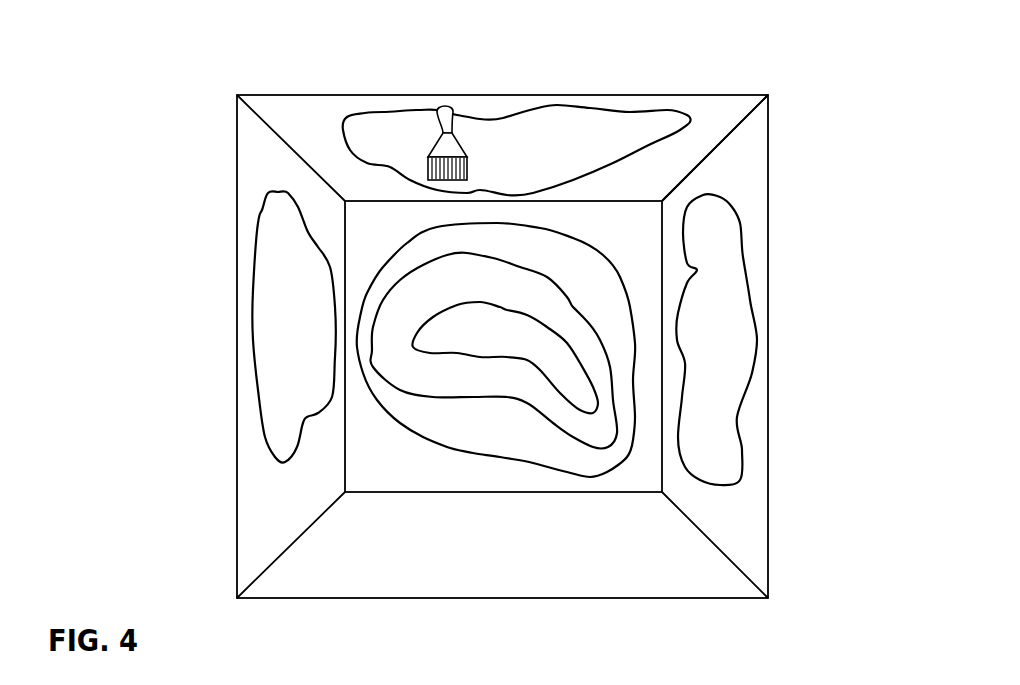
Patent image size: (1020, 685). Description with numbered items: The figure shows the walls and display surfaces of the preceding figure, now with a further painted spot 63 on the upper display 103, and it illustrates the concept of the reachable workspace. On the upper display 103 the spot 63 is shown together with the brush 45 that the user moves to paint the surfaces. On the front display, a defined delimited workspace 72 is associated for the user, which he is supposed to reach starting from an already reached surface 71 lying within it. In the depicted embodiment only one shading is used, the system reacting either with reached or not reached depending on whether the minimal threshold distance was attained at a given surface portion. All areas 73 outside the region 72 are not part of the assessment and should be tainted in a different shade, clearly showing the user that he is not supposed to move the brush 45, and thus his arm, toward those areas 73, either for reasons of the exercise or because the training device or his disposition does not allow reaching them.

The painted spot 63 is at (343, 118).
The brush 45 is at (447, 140).
The upper display 103 is at (712, 117).
The areas outside the region 73 is at (373, 237).
The defined delimited workspace 72 is at (603, 257).
The already reached surface 71 is at (573, 307).